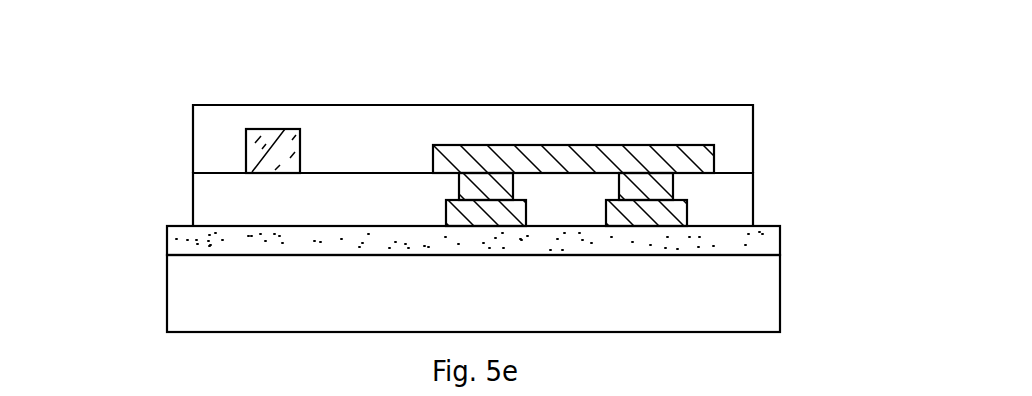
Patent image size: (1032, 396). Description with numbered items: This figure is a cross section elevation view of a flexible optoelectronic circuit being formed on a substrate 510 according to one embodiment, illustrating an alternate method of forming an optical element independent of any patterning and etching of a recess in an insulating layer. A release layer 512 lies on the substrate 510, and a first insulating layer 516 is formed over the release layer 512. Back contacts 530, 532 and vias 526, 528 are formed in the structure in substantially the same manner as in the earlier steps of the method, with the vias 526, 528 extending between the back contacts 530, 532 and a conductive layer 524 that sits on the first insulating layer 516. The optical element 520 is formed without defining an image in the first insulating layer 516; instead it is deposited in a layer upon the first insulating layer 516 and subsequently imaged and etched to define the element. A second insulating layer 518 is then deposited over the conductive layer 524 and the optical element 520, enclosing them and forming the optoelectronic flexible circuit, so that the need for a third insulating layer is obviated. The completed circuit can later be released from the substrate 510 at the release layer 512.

The substrate 510 is at (752, 302).
The release layer 512 is at (765, 236).
The first insulating layer 516 is at (202, 198).
The second insulating layer 518 is at (202, 127).
The optical element 520 is at (285, 129).
The conductive layer 524 is at (710, 143).
The via 526 is at (673, 186).
The via 528 is at (498, 183).
The back contact 530 is at (475, 140).
The back contact 532 is at (689, 200).